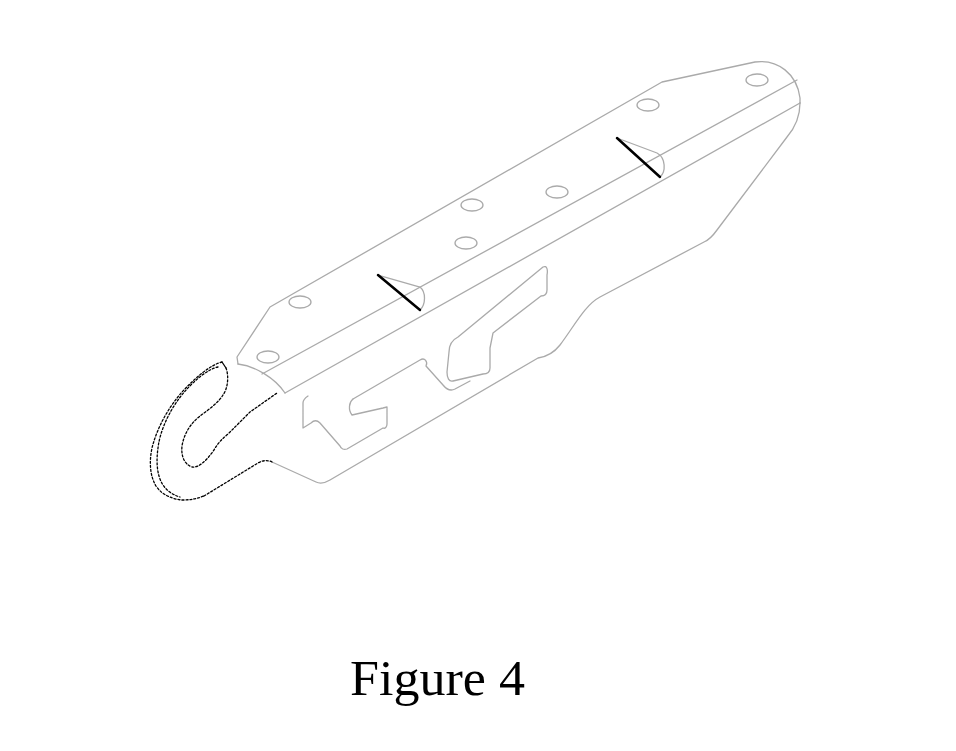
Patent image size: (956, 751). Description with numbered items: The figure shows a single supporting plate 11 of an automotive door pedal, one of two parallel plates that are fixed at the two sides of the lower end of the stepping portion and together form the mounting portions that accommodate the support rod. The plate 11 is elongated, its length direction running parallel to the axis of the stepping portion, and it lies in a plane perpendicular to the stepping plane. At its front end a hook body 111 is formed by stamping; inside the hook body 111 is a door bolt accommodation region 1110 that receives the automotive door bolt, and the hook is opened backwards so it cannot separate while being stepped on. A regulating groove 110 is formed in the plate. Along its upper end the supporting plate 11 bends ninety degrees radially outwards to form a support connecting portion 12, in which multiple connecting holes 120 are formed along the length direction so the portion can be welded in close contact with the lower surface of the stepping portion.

The supporting plate 11 is at (625, 248).
The support connecting portion 12 is at (563, 167).
The connecting hole 120 is at (647, 103).
The regulating groove 110 is at (430, 348).
The hook body 111 is at (172, 430).
The door bolt accommodation region 1110 is at (198, 433).